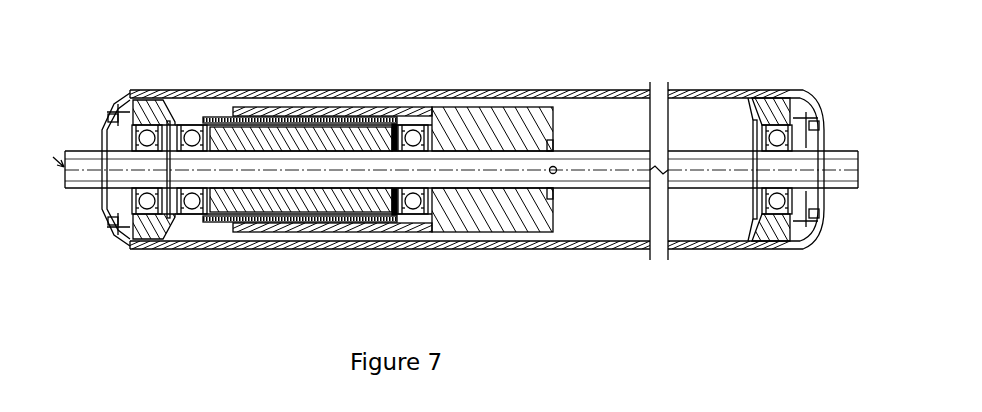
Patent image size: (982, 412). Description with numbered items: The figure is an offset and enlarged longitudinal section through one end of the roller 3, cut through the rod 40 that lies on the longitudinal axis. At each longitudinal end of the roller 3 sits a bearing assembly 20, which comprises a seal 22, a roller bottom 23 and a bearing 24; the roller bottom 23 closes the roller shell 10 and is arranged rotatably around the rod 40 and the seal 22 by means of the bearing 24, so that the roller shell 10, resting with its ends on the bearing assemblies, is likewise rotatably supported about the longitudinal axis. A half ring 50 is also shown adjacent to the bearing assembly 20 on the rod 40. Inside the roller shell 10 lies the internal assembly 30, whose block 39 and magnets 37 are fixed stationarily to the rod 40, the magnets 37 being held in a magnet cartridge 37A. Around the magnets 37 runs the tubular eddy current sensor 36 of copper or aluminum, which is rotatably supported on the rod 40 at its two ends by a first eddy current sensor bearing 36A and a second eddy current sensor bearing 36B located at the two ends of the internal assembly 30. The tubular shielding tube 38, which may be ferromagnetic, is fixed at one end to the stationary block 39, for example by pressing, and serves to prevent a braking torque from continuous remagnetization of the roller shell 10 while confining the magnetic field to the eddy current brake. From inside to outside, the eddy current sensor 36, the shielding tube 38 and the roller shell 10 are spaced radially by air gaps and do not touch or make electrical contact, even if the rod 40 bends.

The roller 3 is at (77, 61).
The roller shell 10 is at (633, 93).
The bearing assembly 20 is at (145, 110).
The seal 22 is at (112, 127).
The roller bottom 23 is at (128, 102).
The bearing 24 is at (145, 207).
The internal assembly 30 is at (295, 200).
The eddy current sensor 36 is at (252, 118).
The first eddy current sensor bearing 36A is at (192, 212).
The second eddy current sensor bearing 36B is at (413, 212).
The magnet 37 is at (287, 128).
The magnet cartridge 37A is at (400, 130).
The shielding tube 38 is at (373, 110).
The block 39 is at (538, 212).
The rod 40 is at (618, 181).
The half ring 50 is at (755, 153).